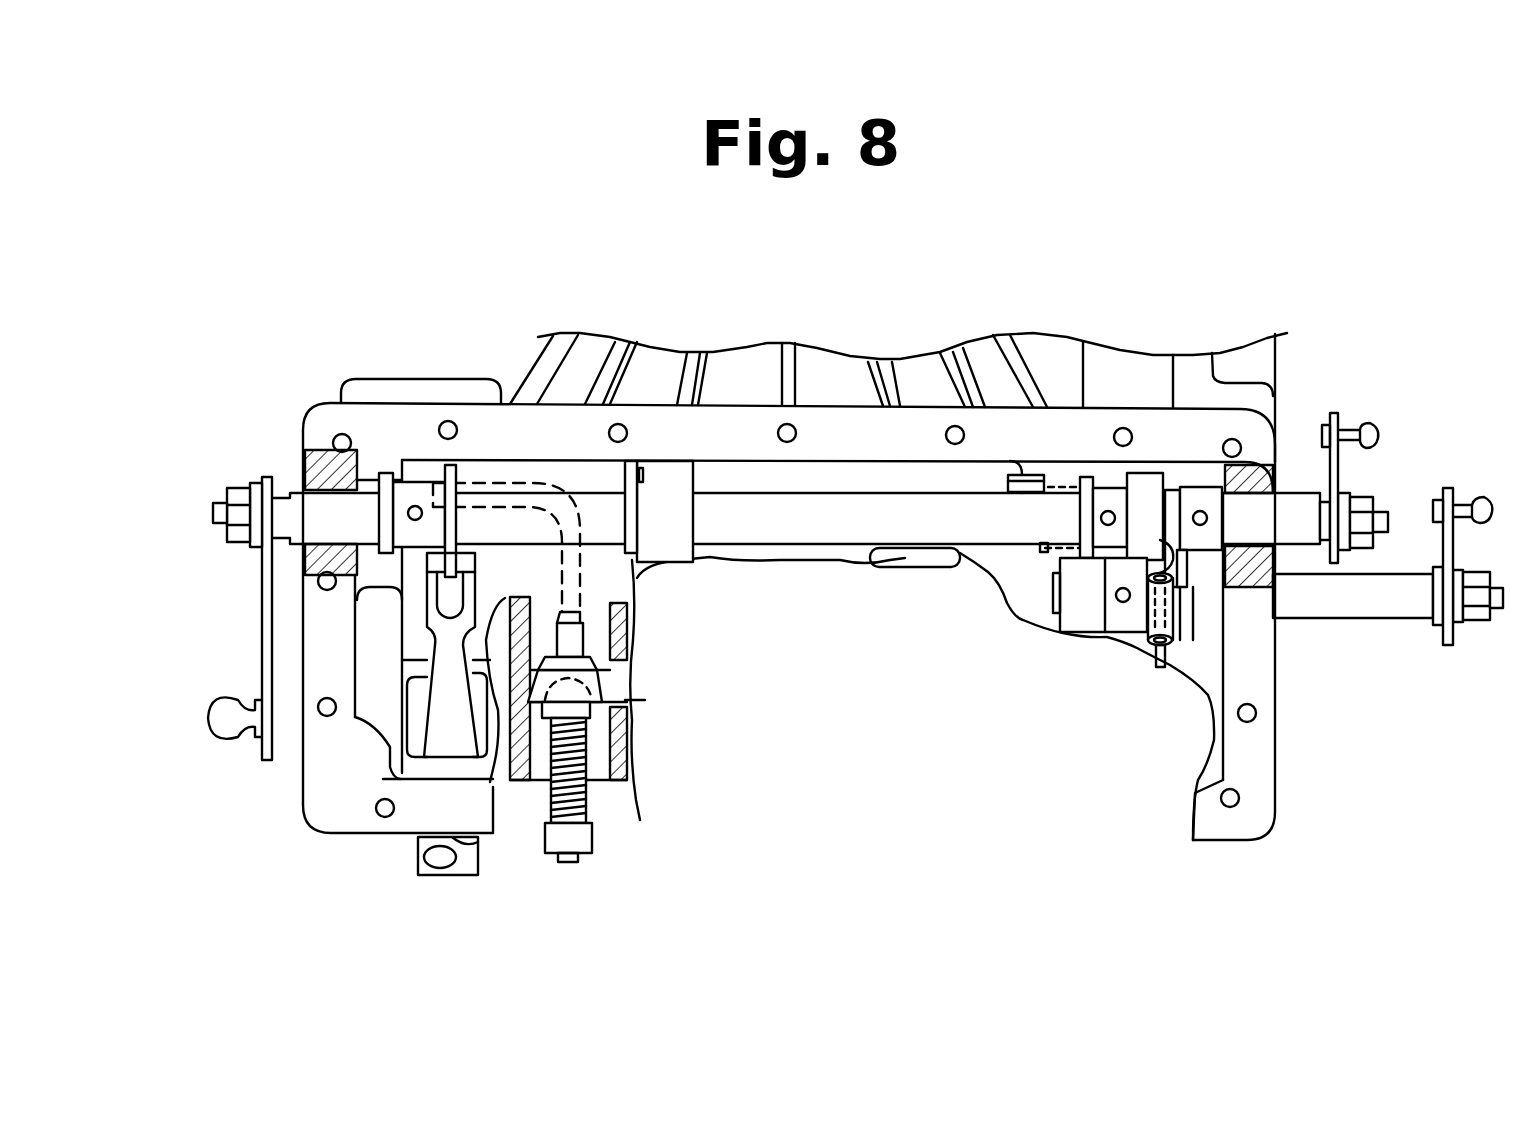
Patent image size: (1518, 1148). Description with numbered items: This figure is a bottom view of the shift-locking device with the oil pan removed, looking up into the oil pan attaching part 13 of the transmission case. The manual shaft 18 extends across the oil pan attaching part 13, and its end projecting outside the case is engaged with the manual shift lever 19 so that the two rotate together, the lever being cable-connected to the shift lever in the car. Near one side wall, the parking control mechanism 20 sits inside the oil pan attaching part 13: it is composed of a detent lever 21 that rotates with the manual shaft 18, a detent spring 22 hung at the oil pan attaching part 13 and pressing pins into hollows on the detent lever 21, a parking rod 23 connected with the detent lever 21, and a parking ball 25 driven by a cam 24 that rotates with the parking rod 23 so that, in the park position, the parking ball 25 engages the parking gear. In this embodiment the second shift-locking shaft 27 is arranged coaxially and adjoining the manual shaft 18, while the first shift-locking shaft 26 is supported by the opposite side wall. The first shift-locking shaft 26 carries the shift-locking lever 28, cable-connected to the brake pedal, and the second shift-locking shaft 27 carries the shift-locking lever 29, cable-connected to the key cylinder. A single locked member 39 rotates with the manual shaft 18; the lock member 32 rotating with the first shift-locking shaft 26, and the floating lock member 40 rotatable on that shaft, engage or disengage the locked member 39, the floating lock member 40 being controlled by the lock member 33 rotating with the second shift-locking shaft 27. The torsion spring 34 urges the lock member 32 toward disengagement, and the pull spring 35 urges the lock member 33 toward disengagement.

The oil pan attaching part 13 is at (327, 812).
The manual shaft 18 is at (848, 527).
The manual shift lever 19 is at (262, 592).
The parking control mechanism 20 is at (483, 562).
The detent lever 21 is at (460, 470).
The detent spring 22 is at (447, 687).
The parking rod 23 is at (612, 612).
The cam 24 is at (612, 708).
The parking ball 25 is at (612, 682).
The first shift-locking shaft 26 is at (1363, 608).
The second shift-locking shaft 27 is at (1295, 500).
The shift-locking lever 28 is at (1450, 488).
The shift-locking lever 29 is at (1336, 413).
The lock member 32 is at (1117, 613).
The lock member 33 is at (1197, 490).
The torsion spring 34 is at (1037, 478).
The pull spring 35 is at (1150, 658).
The locked member 39 is at (1147, 490).
The floating lock member 40 is at (1195, 623).